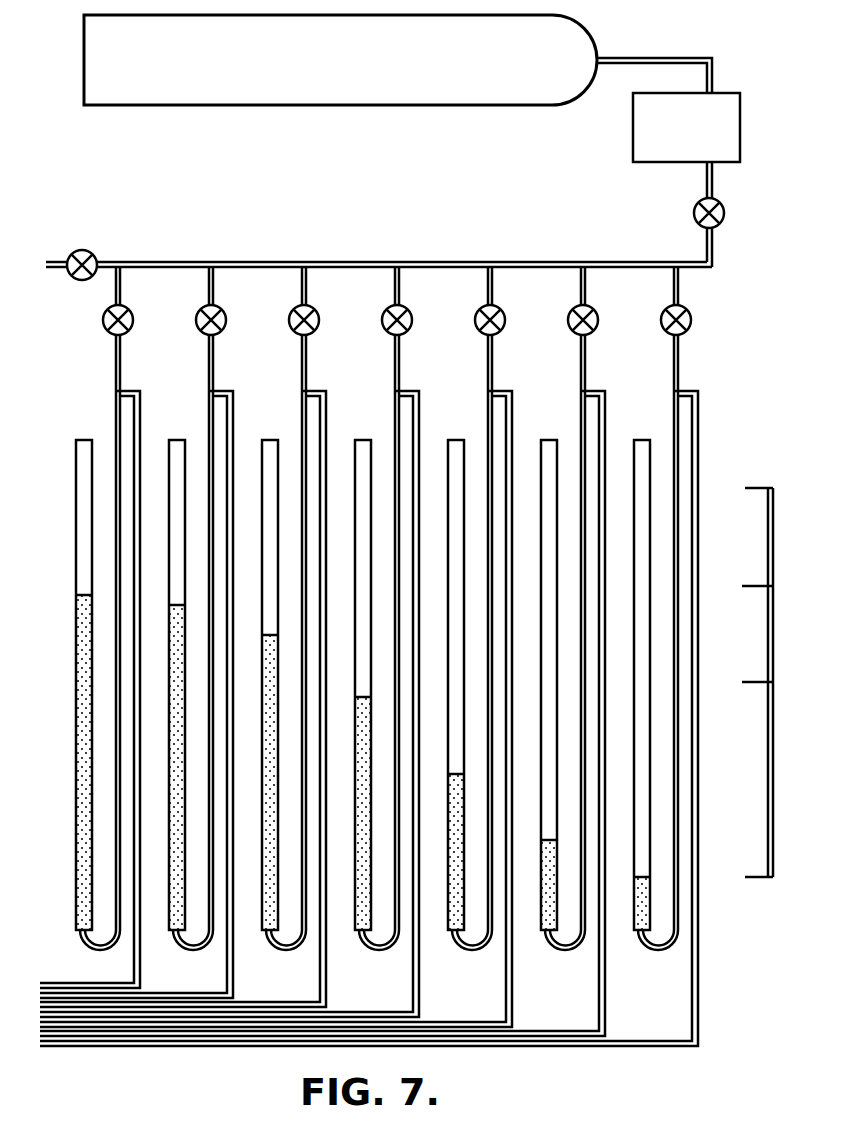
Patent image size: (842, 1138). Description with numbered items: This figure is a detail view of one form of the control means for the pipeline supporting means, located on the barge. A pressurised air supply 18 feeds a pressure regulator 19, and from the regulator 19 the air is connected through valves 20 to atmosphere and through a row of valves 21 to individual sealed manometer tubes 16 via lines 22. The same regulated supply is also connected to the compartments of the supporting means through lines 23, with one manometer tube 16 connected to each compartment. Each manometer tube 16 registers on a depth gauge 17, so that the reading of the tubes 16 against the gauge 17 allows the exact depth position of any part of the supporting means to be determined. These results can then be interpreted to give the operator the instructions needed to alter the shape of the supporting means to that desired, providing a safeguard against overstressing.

The sealed manometer tube 16 is at (84, 440).
The depth gauge 17 is at (760, 487).
The pressurised air supply 18 is at (412, 106).
The pressure regulator 19 is at (637, 140).
The valve 20 is at (694, 213).
The valve 21 is at (129, 313).
The line 22 is at (101, 949).
The line 23 is at (44, 998).